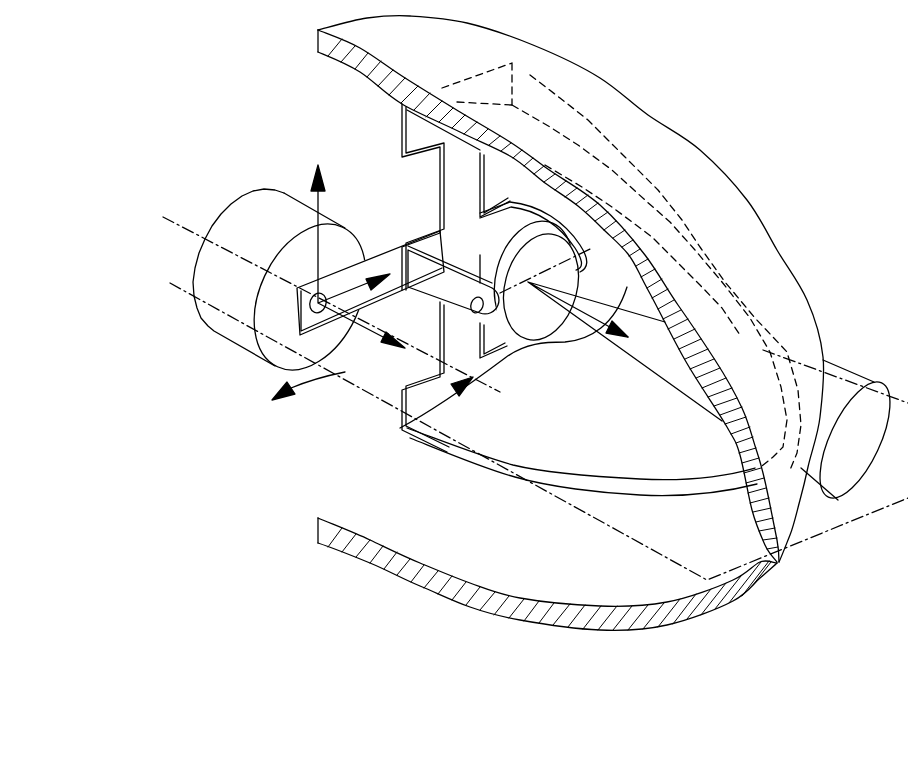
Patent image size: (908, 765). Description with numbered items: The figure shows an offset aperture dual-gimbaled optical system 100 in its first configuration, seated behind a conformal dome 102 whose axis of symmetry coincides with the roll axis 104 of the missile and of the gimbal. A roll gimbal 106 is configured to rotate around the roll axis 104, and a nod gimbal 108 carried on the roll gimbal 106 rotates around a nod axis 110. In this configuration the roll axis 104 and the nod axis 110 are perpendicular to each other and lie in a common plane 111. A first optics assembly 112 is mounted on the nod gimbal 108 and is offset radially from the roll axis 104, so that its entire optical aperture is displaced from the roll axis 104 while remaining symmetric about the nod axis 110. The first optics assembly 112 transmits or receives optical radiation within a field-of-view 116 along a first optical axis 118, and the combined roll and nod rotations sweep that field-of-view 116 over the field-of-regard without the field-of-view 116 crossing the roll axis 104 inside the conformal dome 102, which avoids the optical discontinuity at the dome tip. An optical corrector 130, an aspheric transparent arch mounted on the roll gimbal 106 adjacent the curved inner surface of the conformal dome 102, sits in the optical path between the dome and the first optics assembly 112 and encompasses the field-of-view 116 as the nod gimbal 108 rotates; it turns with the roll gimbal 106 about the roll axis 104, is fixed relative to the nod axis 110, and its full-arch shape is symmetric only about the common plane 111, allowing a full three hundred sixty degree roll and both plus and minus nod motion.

The offset aperture dual-gimbaled optical system 100 is at (806, 140).
The conformal dome 102 is at (777, 563).
The roll axis 104 is at (189, 226).
The roll gimbal 106 is at (281, 184).
The nod gimbal 108 is at (437, 353).
The nod axis 110 is at (318, 377).
The common plane 111 is at (243, 323).
The first optics assembly 112 is at (531, 333).
The field-of-view 116 is at (665, 279).
The first optical axis 118 is at (597, 322).
The optical corrector 130 is at (773, 247).